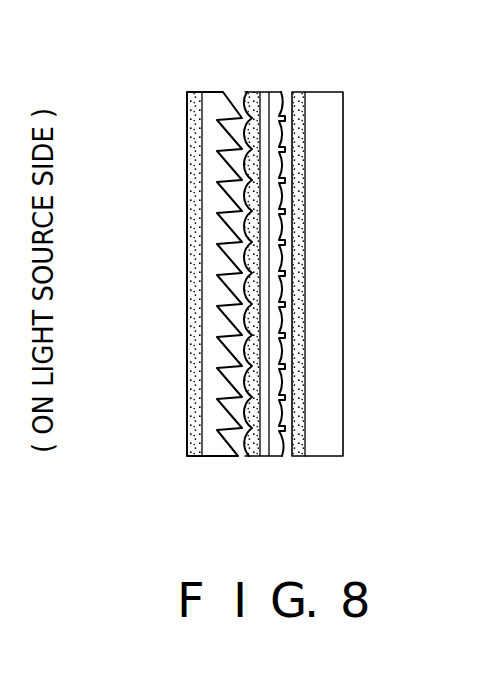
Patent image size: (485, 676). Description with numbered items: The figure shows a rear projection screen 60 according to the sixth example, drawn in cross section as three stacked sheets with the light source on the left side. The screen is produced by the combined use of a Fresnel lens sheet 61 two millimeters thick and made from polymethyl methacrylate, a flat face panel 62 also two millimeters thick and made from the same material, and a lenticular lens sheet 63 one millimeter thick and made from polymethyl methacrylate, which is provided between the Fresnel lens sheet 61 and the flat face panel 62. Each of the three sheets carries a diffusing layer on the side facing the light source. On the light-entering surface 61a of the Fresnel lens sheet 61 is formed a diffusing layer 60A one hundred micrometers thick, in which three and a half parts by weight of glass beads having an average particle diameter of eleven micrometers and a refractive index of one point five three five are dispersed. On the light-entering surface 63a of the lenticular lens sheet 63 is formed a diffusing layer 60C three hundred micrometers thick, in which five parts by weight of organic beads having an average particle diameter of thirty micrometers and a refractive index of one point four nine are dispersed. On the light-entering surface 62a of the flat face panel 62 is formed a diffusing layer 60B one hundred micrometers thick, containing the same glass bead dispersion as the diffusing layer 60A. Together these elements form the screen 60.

The rear projection screen 60 is at (350, 503).
The diffusing layer 60A is at (200, 92).
The diffusing layer 60B is at (298, 92).
The diffusing layer 60C is at (250, 92).
The Fresnel lens sheet 61 is at (218, 456).
The light-entering surface 61a is at (188, 236).
The flat face panel 62 is at (332, 456).
The light-entering surface 62a is at (247, 318).
The lenticular lens sheet 63 is at (272, 456).
The light-entering surface 63a is at (287, 342).